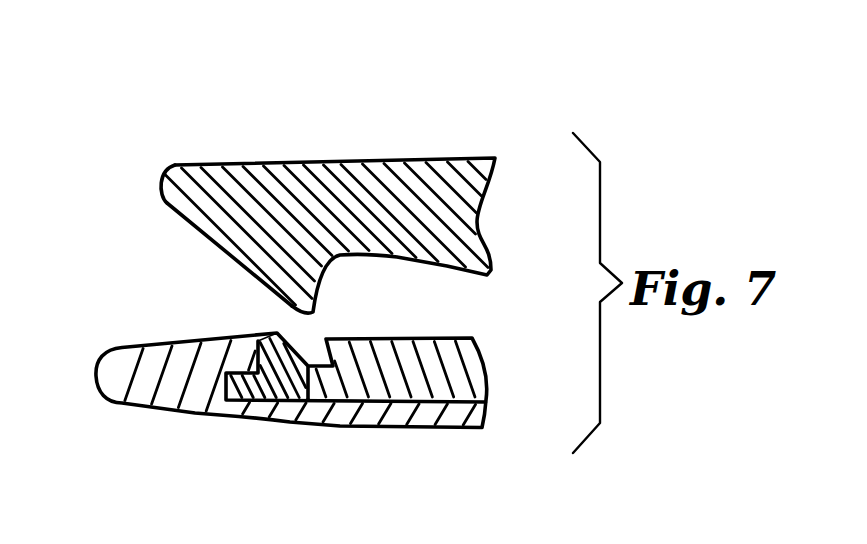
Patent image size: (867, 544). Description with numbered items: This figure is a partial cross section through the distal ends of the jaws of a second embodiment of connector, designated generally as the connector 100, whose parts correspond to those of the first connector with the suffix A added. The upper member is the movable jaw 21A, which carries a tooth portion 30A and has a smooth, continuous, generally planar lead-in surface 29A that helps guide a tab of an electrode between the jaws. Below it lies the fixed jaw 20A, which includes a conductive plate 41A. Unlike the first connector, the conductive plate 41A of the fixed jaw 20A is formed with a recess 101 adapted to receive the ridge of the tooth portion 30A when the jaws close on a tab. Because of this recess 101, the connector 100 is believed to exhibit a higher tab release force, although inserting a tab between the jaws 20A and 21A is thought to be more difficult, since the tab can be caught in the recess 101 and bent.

The connector 100 is at (336, 80).
The movable jaw 21A is at (437, 148).
The tooth portion 30A is at (161, 150).
The lead-in surface 29A is at (203, 240).
The fixed jaw 20A is at (437, 442).
The conductive plate 41A is at (472, 364).
The recess 101 is at (284, 350).